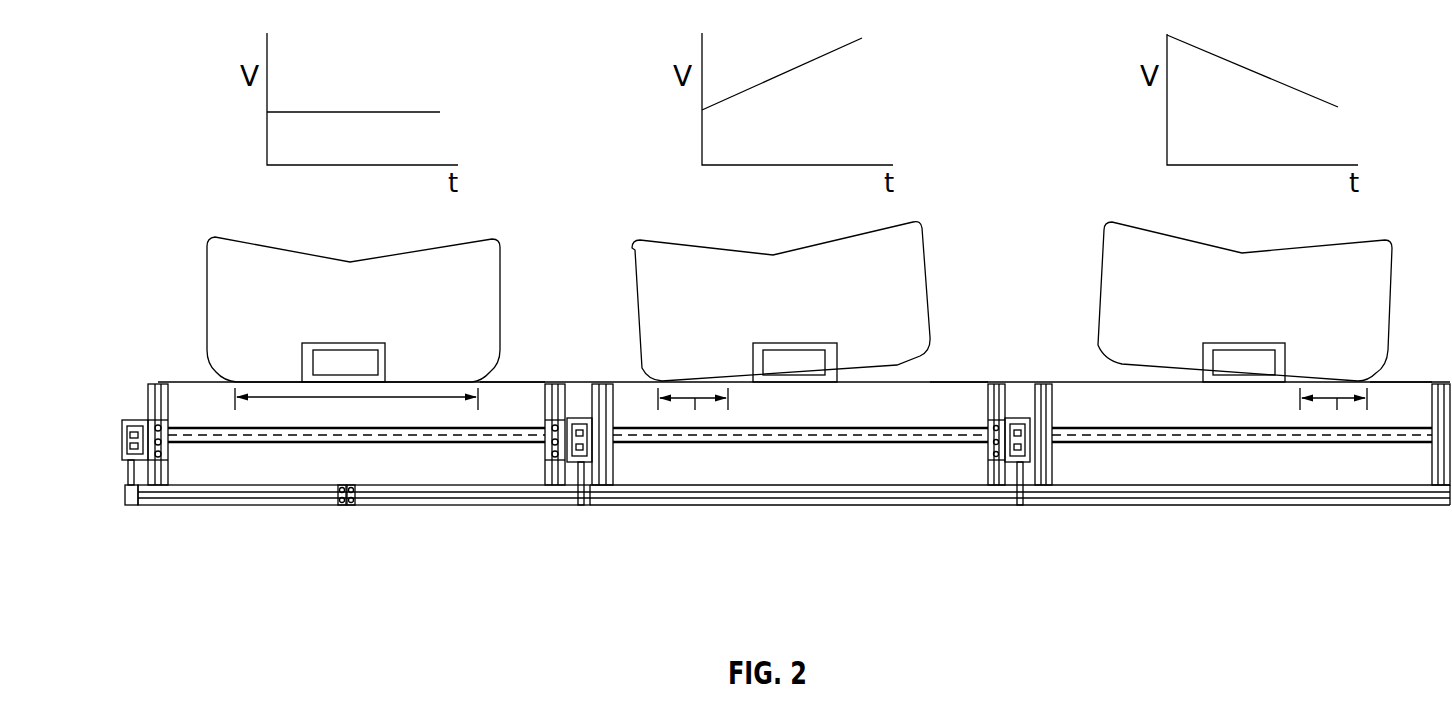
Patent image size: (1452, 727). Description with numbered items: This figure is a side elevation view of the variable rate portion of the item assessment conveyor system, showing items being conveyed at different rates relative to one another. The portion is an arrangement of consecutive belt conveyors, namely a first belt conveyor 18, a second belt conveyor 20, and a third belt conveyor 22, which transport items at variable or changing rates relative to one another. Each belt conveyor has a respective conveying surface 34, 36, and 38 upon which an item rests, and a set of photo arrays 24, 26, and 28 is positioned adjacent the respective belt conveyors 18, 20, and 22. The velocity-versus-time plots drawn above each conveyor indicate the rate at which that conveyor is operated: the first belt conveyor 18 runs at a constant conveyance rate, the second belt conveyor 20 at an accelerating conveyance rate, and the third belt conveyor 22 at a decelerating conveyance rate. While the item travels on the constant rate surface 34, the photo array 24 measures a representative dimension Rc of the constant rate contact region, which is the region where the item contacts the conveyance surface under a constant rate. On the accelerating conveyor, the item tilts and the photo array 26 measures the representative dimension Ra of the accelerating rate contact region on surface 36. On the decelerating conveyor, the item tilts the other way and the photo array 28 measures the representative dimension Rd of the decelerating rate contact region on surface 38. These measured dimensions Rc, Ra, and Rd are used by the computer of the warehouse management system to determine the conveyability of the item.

The first belt conveyor 18 is at (205, 517).
The second belt conveyor 20 is at (684, 514).
The third belt conveyor 22 is at (1128, 517).
The photo array 24 is at (333, 343).
The photo array 26 is at (782, 343).
The photo array 28 is at (1233, 343).
The conveying surface 34 is at (520, 377).
The conveying surface 36 is at (960, 377).
The conveying surface 38 is at (1409, 377).
The representative dimension of constant rate contact region Rc is at (358, 400).
The representative dimension of accelerating rate contact region Ra is at (695, 410).
The representative dimension of decelerating rate contact region Rd is at (1337, 410).